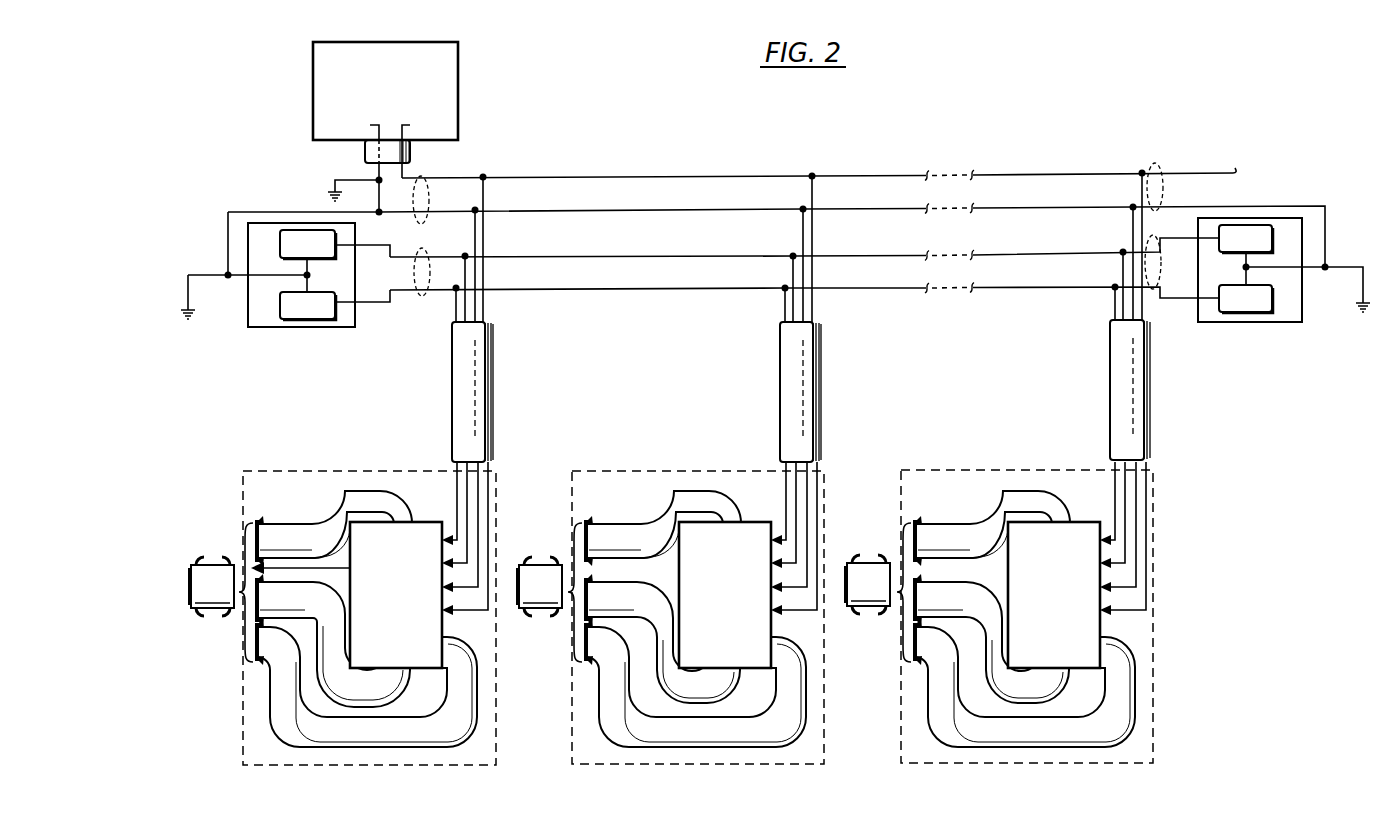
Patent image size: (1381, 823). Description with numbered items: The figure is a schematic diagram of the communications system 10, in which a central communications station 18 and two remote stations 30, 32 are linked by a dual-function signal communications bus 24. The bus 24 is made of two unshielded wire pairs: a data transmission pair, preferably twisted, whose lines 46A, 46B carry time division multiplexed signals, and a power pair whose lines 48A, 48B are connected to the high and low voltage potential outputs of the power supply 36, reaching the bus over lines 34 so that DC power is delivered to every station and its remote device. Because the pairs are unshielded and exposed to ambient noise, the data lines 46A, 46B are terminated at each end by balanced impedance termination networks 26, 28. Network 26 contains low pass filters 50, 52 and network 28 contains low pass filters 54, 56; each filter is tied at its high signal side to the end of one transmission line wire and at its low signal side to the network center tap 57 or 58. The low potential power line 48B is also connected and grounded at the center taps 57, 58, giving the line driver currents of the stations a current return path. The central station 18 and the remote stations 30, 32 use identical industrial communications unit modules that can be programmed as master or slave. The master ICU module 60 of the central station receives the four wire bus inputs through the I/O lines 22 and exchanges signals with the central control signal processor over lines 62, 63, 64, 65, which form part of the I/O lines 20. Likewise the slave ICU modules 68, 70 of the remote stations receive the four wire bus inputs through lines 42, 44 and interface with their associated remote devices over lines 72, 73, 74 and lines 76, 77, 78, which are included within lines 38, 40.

The communications system 10 is at (1214, 99).
The central communications station 18 is at (302, 471).
The input/output lines 20 is at (211, 567).
The I/O lines 22 is at (452, 382).
The signal communications bus 24 is at (676, 130).
The termination network 26 is at (289, 288).
The termination network 28 is at (1261, 285).
The remote station 30 is at (696, 603).
The remote station 32 is at (1025, 602).
The power supply lines 34 is at (365, 150).
The power supply 36 is at (459, 86).
The lines 38 is at (540, 571).
The lines 40 is at (868, 569).
The lines 42 is at (780, 387).
The lines 44 is at (1110, 390).
The transmission line wire 46A is at (539, 257).
The transmission line wire 46B is at (539, 289).
The power distribution line 48A is at (539, 179).
The power distribution line 48B is at (539, 212).
The low pass filter 50 is at (280, 240).
The low pass filter 52 is at (280, 298).
The low pass filter 54 is at (1272, 238).
The low pass filter 56 is at (1272, 290).
The center tap 57 is at (236, 280).
The center tap 58 is at (1311, 272).
The master ICU module 60 is at (421, 521).
The interface line 62 is at (280, 533).
The interface line 63 is at (312, 567).
The interface line 64 is at (284, 607).
The interface line 65 is at (278, 696).
The slave ICU module 68 is at (725, 576).
The slave ICU module 70 is at (1054, 575).
The interface line 72 is at (662, 528).
The interface line 73 is at (662, 631).
The interface line 74 is at (695, 680).
The interface line 76 is at (991, 528).
The interface line 77 is at (991, 630).
The interface line 78 is at (1024, 679).